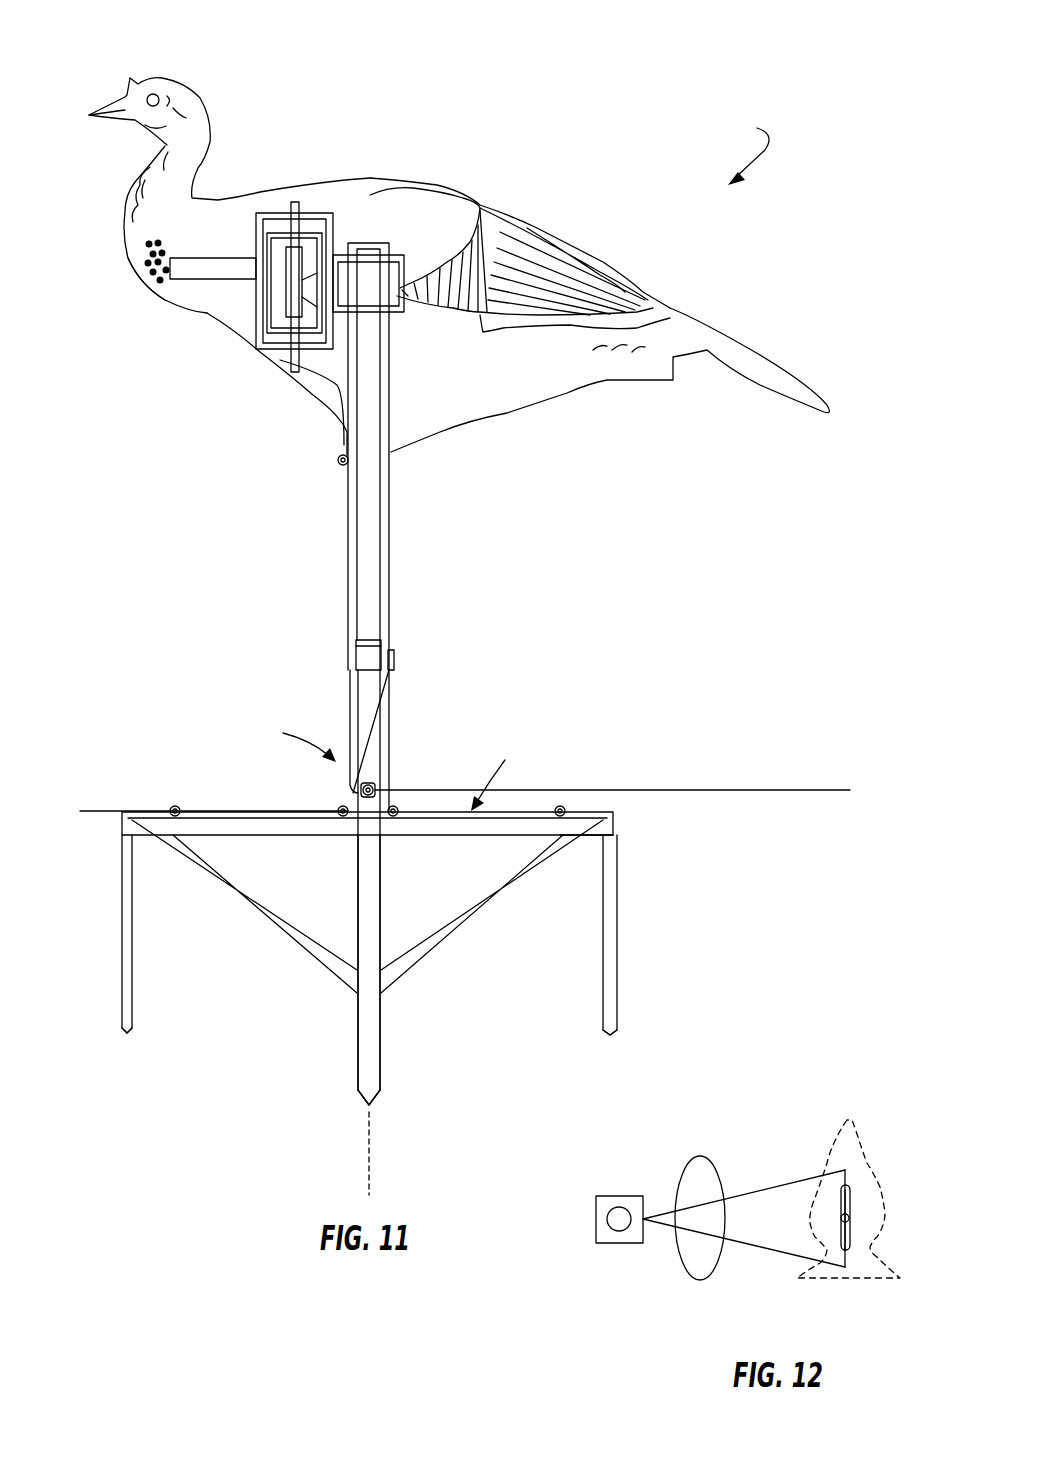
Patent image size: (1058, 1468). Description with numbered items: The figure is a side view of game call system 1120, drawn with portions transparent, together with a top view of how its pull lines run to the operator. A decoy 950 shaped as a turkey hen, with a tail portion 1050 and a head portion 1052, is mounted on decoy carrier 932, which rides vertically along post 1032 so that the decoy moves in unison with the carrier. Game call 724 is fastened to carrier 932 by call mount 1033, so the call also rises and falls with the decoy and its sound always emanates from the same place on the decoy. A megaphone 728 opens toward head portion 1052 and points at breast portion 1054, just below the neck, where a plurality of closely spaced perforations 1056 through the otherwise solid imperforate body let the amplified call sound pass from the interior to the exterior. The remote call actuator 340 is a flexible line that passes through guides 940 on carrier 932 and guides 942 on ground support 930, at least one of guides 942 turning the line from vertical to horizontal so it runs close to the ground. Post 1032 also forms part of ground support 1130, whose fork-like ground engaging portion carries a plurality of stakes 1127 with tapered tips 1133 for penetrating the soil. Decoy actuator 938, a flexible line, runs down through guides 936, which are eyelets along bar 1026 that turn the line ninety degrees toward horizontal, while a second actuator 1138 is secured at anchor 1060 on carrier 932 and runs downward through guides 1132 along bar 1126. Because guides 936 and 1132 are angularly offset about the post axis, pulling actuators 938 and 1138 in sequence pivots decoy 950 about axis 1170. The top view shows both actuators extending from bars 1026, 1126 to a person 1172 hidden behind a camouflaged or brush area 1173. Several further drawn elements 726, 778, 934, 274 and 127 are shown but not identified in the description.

In FIG. 11, the head portion 1052 is at (188, 79).
In FIG. 11, the tail portion 1050 is at (712, 333).
In FIG. 11, the game call system 1120 is at (733, 148).
In FIG. 11, the breast portion 1054 is at (140, 262).
In FIG. 11, the perforations 1056 is at (160, 280).
In FIG. 11, the megaphone 728 is at (220, 282).
In FIG. 11, the bracket housing 726 is at (268, 213).
In FIG. 11, the game call 724 is at (277, 337).
In FIG. 11, the vertical rod 778 is at (293, 365).
In FIG. 11, the call mount 1033 is at (397, 248).
In FIG. 11, the decoy carrier 932 is at (389, 525).
In FIG. 11, the inner tube 934 is at (357, 541).
In FIG. 11, the end cap 274 is at (352, 680).
In FIG. 11, the anchor 1060 is at (393, 660).
In FIG. 11, the guides 940 is at (340, 465).
In FIG. 11, the ground support 1130 is at (294, 731).
In FIG. 11, the actuator 1138 is at (368, 735).
In FIG. 12, the actuator 1138 is at (760, 1247).
In FIG. 11, the post 1032 is at (360, 735).
In FIG. 12, the post 1032 is at (851, 1228).
In FIG. 11, the stake 127 is at (381, 1025).
In FIG. 11, the guides 942 is at (375, 785).
In FIG. 11, the remote call actuator 340 is at (762, 789).
In FIG. 11, the ground support 930 is at (367, 783).
In FIG. 11, the decoy actuator 938 is at (633, 816).
In FIG. 12, the decoy actuator 938 is at (767, 1189).
In FIG. 11, the guides 1132 is at (176, 808).
In FIG. 11, the guides 936 is at (394, 809).
In FIG. 11, the ground engaging stakes 1127 is at (121, 903).
In FIG. 11, the tapered tips 1133 is at (132, 1028).
In FIG. 11, the bar 1126 is at (262, 836).
In FIG. 12, the bar 1126 is at (841, 1192).
In FIG. 11, the bar 1026 is at (430, 836).
In FIG. 12, the bar 1026 is at (838, 1232).
In FIG. 11, the axis 1170 is at (366, 1170).
In FIG. 12, the axis 1170 is at (842, 1218).
In FIG. 12, the person 1172 is at (619, 1195).
In FIG. 12, the camouflaged or brush area 1173 is at (716, 1170).
In FIG. 12, the decoy 950 is at (872, 1172).